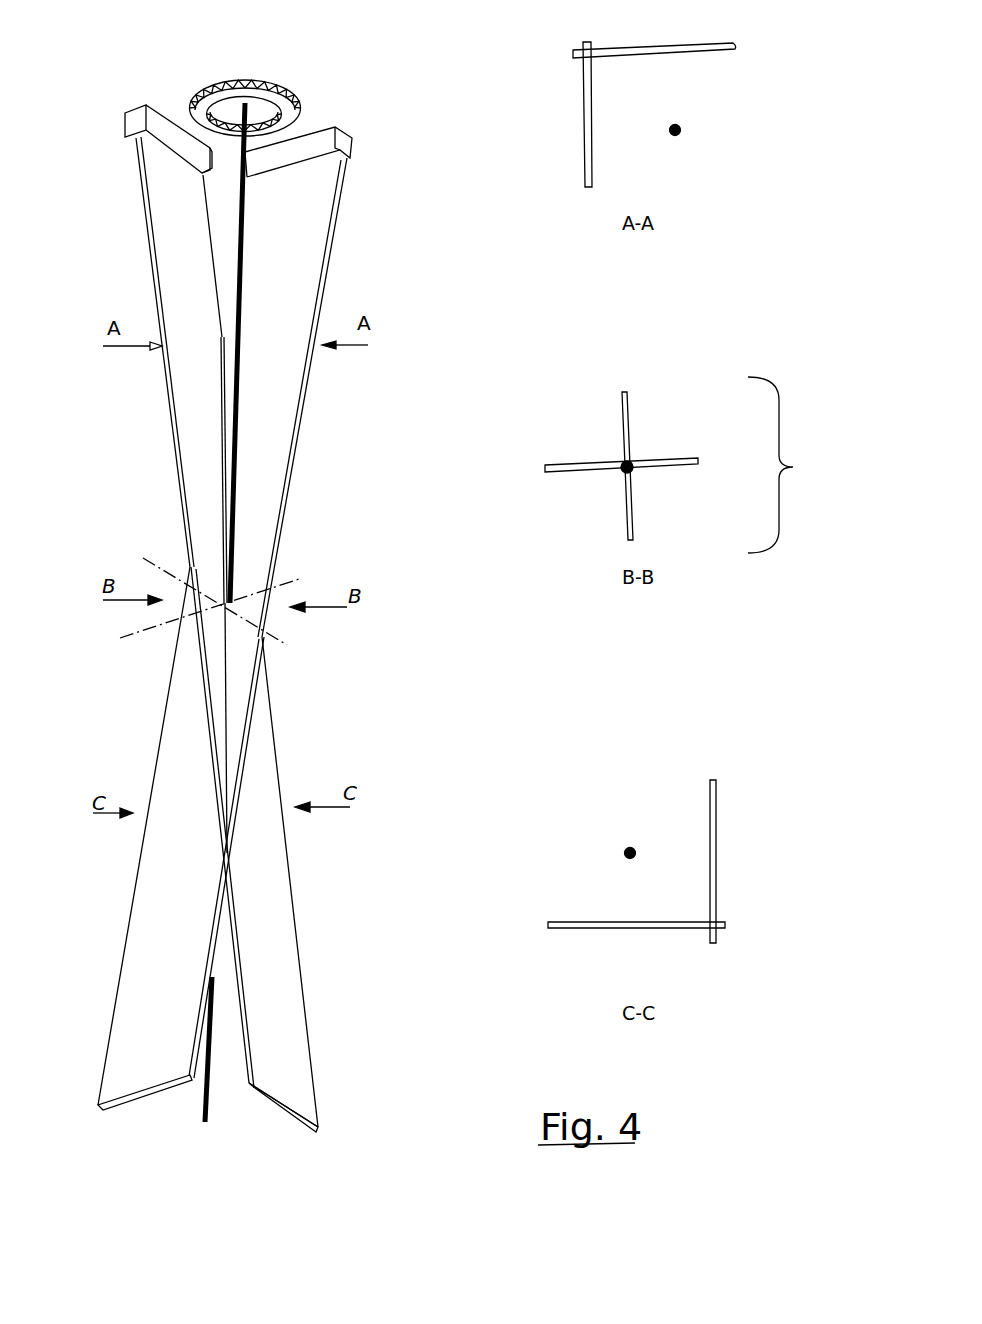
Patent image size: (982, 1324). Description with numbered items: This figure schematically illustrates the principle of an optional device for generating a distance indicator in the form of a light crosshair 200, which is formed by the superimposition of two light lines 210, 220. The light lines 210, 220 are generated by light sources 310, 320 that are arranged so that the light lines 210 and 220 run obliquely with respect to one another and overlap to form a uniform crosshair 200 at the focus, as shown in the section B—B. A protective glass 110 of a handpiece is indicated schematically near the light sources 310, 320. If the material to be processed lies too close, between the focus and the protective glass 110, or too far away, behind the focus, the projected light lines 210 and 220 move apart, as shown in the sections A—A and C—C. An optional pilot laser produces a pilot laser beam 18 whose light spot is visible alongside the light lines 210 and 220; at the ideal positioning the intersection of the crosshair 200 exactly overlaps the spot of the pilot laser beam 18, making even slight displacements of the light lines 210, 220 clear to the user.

The protective glass 110 is at (268, 80).
The pilot laser beam 18 is at (240, 281).
The light line 210 is at (142, 170).
The light line 220 is at (308, 210).
The light source 310 is at (128, 119).
The light source 320 is at (345, 143).
The light crosshair 200 is at (797, 467).